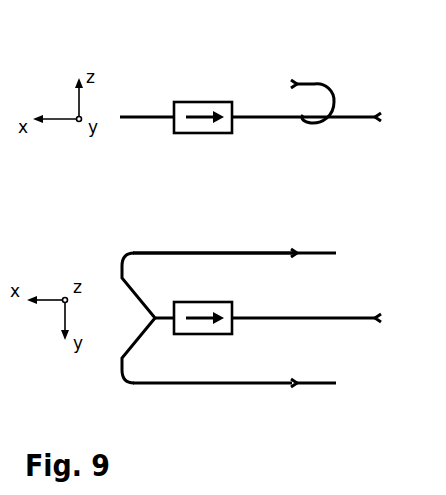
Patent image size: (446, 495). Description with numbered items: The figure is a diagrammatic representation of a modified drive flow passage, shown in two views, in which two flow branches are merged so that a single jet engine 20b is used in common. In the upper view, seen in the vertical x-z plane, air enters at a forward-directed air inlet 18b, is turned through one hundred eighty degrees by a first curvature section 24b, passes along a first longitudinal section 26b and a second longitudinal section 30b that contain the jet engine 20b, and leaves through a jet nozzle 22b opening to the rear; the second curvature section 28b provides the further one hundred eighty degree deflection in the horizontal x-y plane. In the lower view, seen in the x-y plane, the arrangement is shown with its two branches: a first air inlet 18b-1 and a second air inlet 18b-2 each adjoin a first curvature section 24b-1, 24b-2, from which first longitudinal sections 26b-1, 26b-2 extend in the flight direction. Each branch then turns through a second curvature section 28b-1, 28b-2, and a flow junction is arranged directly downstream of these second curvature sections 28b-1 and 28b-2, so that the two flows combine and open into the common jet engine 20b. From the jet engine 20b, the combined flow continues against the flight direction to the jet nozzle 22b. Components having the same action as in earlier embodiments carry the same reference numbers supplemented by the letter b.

The air inlet 18b is at (294, 72).
The jet engine 20b is at (203, 206).
The jet nozzle 22b is at (396, 219).
The first curvature section 24b is at (329, 97).
The first longitudinal section 26b is at (268, 130).
The second curvature section 28b is at (207, 174).
The second longitudinal section 30b is at (304, 217).
The air inlet 18b-1 is at (285, 239).
The air inlet 18b-2 is at (293, 397).
The first curvature section 24b-1 is at (341, 252).
The first curvature section 24b-2 is at (341, 383).
The first longitudinal section 26b-1 is at (212, 240).
The first longitudinal section 26b-2 is at (212, 398).
The second curvature section 28b-1 is at (126, 279).
The second curvature section 28b-2 is at (116, 358).